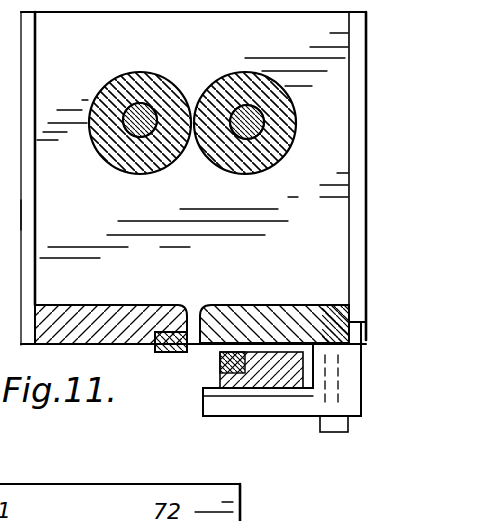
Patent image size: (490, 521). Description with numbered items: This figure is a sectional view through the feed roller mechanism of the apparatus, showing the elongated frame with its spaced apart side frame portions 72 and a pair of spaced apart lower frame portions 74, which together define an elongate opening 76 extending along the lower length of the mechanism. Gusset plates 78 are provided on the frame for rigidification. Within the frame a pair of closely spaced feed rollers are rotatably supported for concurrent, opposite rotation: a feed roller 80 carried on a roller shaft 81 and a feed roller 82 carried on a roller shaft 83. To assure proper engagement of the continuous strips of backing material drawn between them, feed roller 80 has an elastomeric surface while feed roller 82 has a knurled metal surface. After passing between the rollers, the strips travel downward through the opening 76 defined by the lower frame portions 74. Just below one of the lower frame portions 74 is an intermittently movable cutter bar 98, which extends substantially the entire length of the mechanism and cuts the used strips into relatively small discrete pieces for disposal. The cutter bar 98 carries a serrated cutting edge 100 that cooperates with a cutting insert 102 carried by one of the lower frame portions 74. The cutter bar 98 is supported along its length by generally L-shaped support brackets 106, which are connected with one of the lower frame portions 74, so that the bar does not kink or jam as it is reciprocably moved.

The side frame portion 72 is at (82, 55).
The lower frame portion 74 is at (87, 317).
The elongate opening 76 is at (197, 323).
The gusset plate 78 is at (28, 208).
The feed roller 80 is at (153, 82).
The roller shaft 81 is at (146, 140).
The feed roller 82 is at (255, 80).
The roller shaft 83 is at (250, 133).
The cutter bar 98 is at (300, 380).
The serrated cutting edge 100 is at (222, 362).
The cutting insert 102 is at (157, 353).
The L-shaped support bracket 106 is at (252, 407).